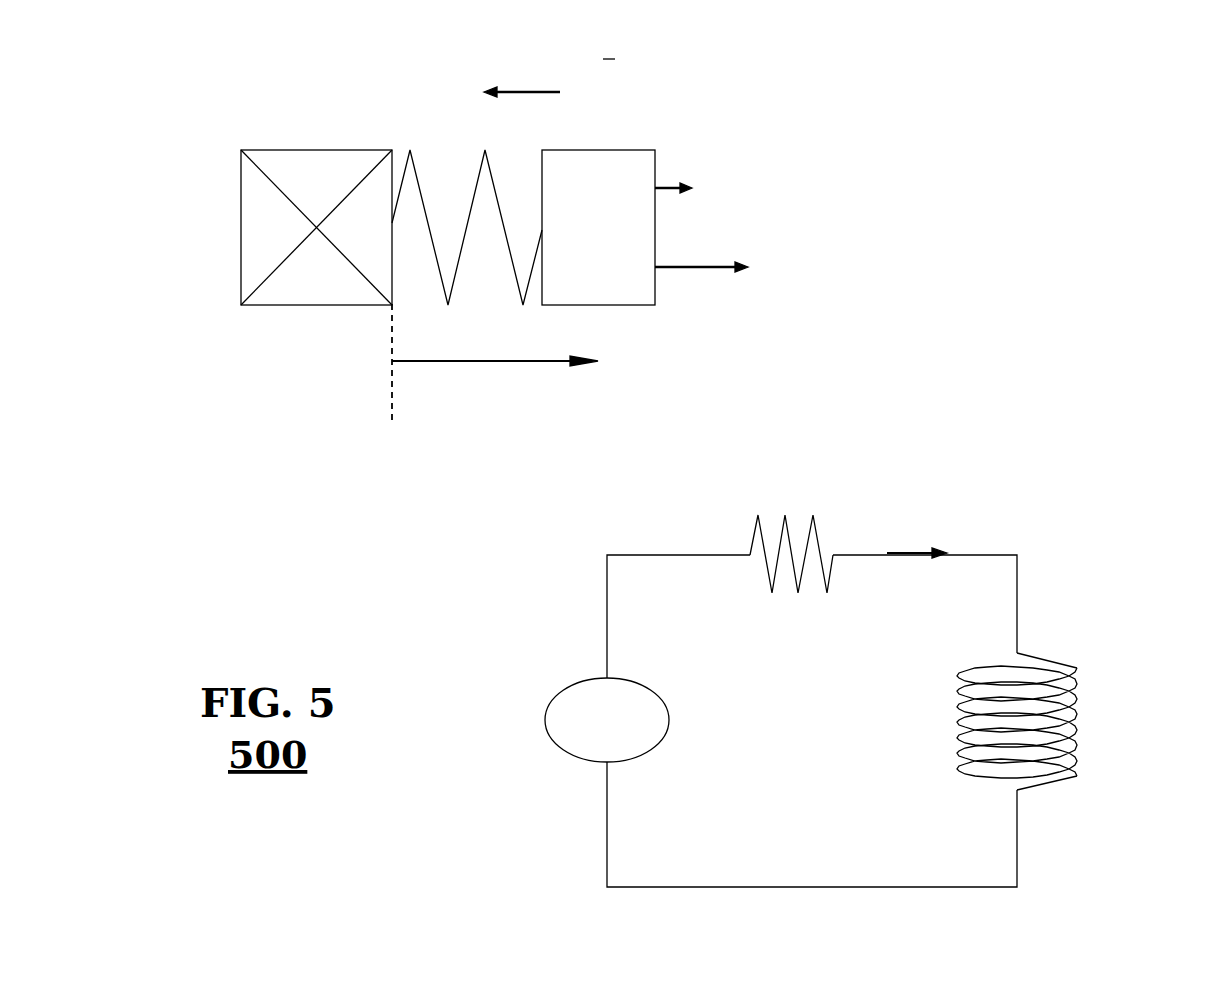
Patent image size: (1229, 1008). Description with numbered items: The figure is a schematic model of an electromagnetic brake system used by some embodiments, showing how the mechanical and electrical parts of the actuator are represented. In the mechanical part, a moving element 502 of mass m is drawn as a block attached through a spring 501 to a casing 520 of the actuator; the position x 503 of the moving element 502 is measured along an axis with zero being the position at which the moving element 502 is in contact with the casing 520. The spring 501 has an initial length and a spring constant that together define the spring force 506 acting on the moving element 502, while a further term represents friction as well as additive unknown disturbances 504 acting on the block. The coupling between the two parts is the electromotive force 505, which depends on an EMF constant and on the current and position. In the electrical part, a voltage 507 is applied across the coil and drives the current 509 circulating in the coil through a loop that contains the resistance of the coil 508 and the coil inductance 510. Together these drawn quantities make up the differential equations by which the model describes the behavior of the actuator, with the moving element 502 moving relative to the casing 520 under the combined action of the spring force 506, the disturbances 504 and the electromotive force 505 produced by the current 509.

The spring 501 is at (438, 195).
The moving element 502 is at (627, 305).
The position x 503 is at (787, 510).
The friction and additive unknown disturbances 504 is at (670, 188).
The electromotive force 505 is at (558, 90).
The spring force 506 is at (715, 265).
The voltage 507 is at (571, 683).
The resistance of the coil 508 is at (525, 365).
The current 509 is at (912, 550).
The coil inductance 510 is at (1138, 693).
The casing 520 is at (265, 305).